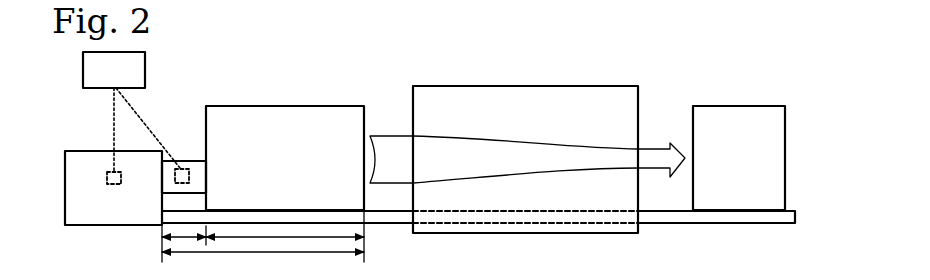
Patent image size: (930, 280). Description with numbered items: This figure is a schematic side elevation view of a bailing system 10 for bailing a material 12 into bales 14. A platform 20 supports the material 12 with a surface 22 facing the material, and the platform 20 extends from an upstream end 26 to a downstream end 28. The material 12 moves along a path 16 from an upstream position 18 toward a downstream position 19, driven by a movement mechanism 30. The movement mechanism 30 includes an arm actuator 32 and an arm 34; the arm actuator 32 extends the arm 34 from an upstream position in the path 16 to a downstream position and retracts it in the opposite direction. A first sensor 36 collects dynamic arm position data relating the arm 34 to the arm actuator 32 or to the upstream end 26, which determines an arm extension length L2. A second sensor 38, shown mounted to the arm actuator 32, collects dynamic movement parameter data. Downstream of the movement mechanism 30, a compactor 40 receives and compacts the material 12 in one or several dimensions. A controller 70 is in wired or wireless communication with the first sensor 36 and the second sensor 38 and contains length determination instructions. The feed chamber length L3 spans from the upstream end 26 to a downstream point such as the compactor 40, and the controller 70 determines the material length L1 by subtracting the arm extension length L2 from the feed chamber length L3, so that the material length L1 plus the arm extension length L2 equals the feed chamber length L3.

The bailing system 10 is at (735, 67).
The material 12 is at (218, 140).
The bales 14 is at (726, 172).
The path 16 is at (408, 174).
The upstream position 18 is at (397, 136).
The downstream position 19 is at (645, 149).
The platform 20 is at (395, 219).
The surface 22 is at (387, 211).
The upstream end 26 is at (162, 218).
The downstream end 28 is at (795, 220).
The movement mechanism 30 is at (72, 117).
The arm actuator 32 is at (69, 191).
The arm 34 is at (196, 164).
The first sensor 36 is at (190, 180).
The second sensor 38 is at (104, 163).
The compactor 40 is at (509, 120).
The controller 70 is at (102, 82).
The material length L1 is at (278, 235).
The arm extension length L2 is at (178, 234).
The feed chamber length L3 is at (250, 254).